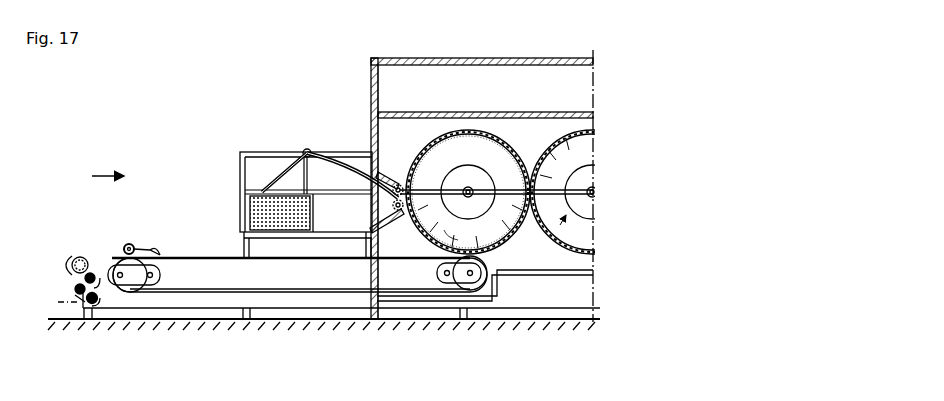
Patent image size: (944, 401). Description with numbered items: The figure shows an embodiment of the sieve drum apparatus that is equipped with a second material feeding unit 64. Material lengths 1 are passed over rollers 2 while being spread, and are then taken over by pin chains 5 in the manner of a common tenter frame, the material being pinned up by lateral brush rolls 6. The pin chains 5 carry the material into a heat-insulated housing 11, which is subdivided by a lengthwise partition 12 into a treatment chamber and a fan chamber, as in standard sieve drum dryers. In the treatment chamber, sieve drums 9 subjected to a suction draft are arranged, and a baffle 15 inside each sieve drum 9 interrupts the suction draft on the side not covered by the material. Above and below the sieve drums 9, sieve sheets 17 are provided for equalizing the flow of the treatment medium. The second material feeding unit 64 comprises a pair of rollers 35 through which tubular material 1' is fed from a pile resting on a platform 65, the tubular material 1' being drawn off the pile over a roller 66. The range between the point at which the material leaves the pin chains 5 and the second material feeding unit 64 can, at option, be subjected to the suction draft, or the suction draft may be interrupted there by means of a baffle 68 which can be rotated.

The material lengths 1 is at (324, 340).
The tubular material 1' is at (294, 205).
The rollers 2 is at (78, 290).
The pin chains 5 is at (145, 293).
The lateral brush rolls 6 is at (128, 244).
The sieve drums 9 is at (500, 149).
The heat-insulated housing 11 is at (440, 60).
The lengthwise partition 12 is at (397, 108).
The baffle 15 is at (418, 160).
The sieve sheets 17 is at (490, 112).
The pair of rollers 35 is at (378, 182).
The second material feeding unit 64 is at (364, 214).
The platform 65 is at (240, 232).
The roller 66 is at (307, 150).
The rotatable baffle 68 is at (444, 232).